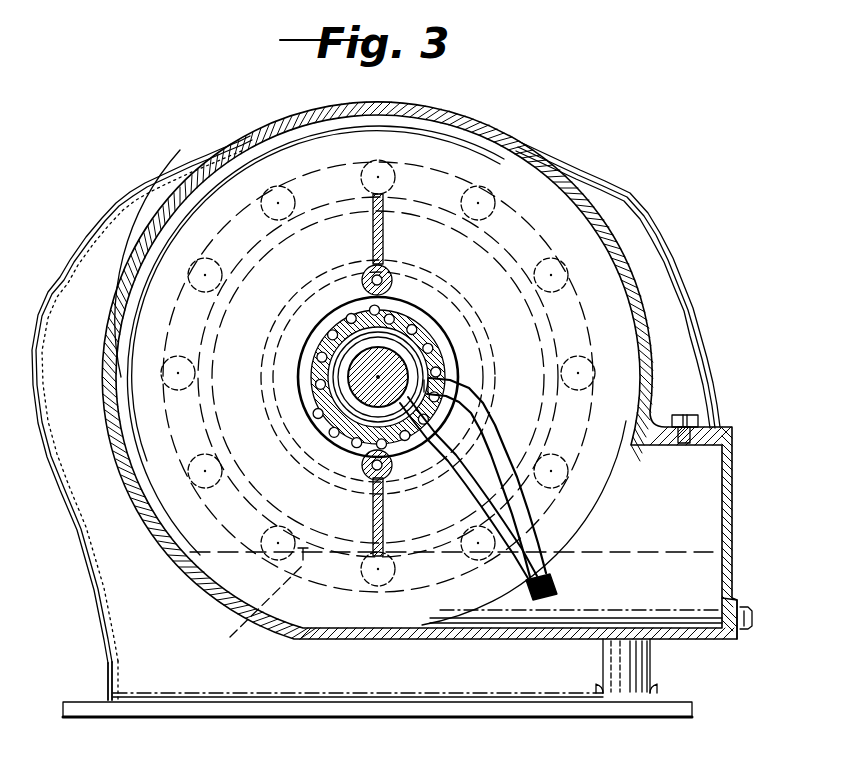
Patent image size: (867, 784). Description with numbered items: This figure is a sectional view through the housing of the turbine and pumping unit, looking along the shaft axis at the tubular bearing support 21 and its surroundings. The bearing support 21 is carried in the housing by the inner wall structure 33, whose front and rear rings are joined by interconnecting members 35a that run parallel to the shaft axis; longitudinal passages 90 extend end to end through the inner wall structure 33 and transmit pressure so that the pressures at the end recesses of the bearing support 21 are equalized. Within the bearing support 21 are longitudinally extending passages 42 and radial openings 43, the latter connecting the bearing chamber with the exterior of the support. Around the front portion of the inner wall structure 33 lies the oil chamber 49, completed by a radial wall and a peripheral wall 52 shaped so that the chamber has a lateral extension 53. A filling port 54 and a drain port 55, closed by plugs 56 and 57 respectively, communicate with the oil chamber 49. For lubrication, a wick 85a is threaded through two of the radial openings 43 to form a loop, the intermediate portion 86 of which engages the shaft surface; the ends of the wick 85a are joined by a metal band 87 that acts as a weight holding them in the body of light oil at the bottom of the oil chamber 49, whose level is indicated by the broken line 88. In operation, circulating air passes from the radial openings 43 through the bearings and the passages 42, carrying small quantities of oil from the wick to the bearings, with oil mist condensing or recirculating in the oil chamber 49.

The bearing support 21 is at (417, 333).
The inner wall structure 33 is at (405, 291).
The interconnecting members 35a is at (373, 231).
The longitudinally extending passages 42 is at (432, 358).
The radial openings 43 is at (457, 375).
The oil chamber 49 is at (503, 177).
The peripheral wall 52 is at (601, 223).
The lateral extension 53 is at (451, 539).
The filling port 54 is at (720, 427).
The drain port 55 is at (722, 640).
The plug 56 is at (678, 414).
The plug 57 is at (750, 630).
The wick 85a is at (500, 440).
The intermediate portion 86 is at (437, 363).
The metal band 87 is at (560, 586).
The broken line 88 is at (257, 603).
The longitudinal passages 90 is at (386, 272).